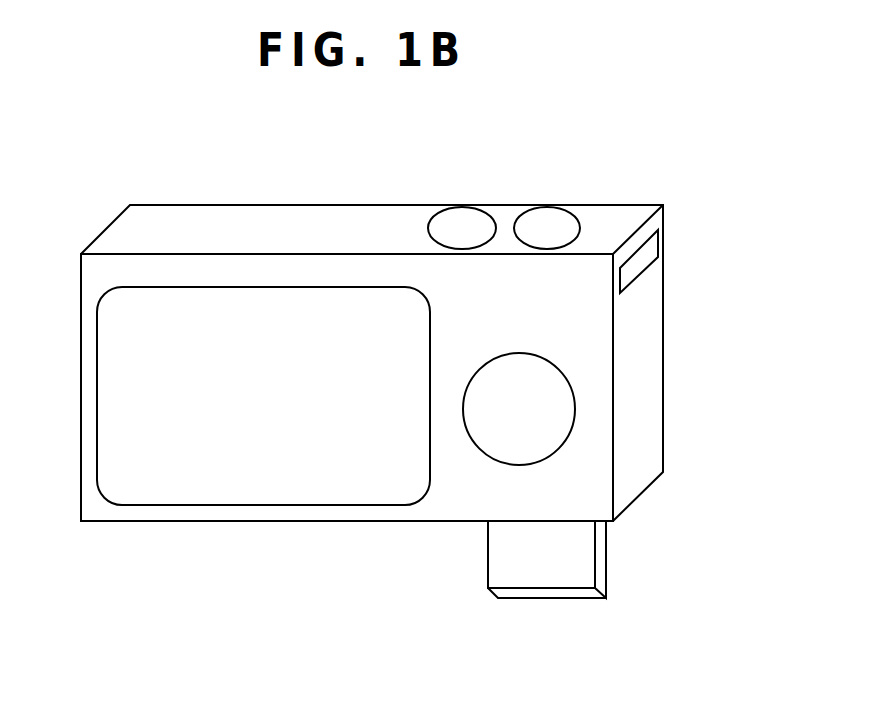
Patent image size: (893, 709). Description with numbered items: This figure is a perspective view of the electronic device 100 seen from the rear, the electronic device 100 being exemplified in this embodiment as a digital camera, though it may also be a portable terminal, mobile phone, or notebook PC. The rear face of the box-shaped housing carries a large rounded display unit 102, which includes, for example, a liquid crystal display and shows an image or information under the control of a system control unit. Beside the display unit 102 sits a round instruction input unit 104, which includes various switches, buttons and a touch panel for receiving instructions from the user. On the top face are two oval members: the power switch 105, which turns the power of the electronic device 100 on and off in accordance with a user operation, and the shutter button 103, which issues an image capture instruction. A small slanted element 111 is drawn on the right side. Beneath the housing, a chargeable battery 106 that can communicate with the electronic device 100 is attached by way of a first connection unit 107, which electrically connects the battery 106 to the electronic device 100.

The electronic device 100 is at (122, 236).
The display unit 102 is at (374, 303).
The shutter button 103 is at (543, 217).
The instruction input unit 104 is at (573, 393).
The power switch 105 is at (458, 217).
The battery 106 is at (607, 567).
The first connection unit 107 is at (527, 523).
The terminal portion 111 is at (652, 248).